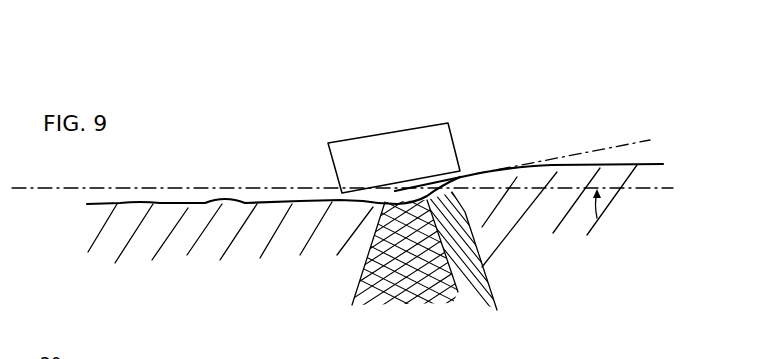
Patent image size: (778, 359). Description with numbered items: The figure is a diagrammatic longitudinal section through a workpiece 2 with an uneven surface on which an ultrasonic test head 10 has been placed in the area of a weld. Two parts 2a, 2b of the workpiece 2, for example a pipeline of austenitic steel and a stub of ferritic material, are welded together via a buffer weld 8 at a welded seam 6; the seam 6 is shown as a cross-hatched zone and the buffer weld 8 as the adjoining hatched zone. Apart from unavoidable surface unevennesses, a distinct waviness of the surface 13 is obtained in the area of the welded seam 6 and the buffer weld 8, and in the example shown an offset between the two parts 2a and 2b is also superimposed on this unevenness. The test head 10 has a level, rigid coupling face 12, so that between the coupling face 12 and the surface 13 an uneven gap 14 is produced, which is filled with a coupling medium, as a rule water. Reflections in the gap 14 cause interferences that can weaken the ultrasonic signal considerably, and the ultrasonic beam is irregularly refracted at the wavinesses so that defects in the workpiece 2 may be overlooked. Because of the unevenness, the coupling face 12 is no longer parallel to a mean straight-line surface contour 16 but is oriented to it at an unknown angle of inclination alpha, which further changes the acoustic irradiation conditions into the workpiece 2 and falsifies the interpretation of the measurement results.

The workpiece 2 is at (400, 218).
The first part of the workpiece 2a is at (163, 213).
The second part of the workpiece 2b is at (629, 249).
The welded seam 6 is at (410, 297).
The buffer weld 8 is at (482, 307).
The ultrasonic test head 10 is at (393, 120).
The coupling face 12 is at (398, 180).
The surface of the workpiece 13 is at (663, 164).
The gap 14 is at (423, 210).
The mean straight-line surface contour 16 is at (653, 189).
The angle of inclination alpha is at (583, 123).